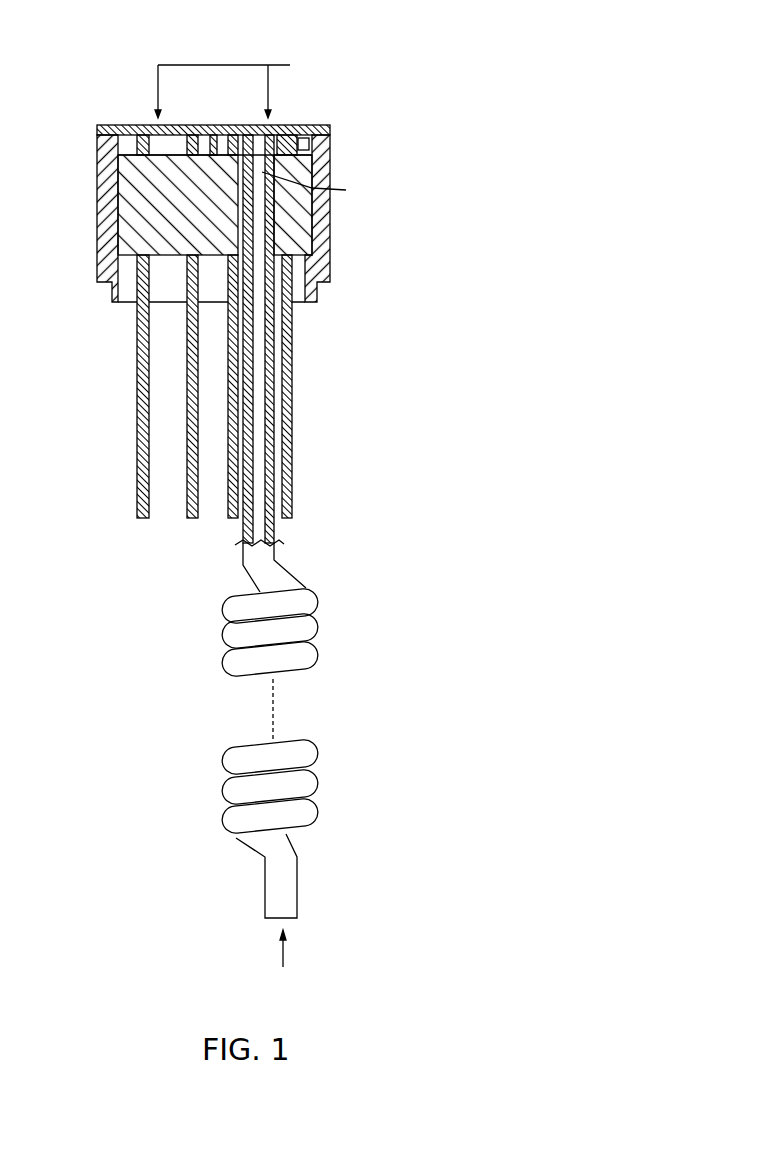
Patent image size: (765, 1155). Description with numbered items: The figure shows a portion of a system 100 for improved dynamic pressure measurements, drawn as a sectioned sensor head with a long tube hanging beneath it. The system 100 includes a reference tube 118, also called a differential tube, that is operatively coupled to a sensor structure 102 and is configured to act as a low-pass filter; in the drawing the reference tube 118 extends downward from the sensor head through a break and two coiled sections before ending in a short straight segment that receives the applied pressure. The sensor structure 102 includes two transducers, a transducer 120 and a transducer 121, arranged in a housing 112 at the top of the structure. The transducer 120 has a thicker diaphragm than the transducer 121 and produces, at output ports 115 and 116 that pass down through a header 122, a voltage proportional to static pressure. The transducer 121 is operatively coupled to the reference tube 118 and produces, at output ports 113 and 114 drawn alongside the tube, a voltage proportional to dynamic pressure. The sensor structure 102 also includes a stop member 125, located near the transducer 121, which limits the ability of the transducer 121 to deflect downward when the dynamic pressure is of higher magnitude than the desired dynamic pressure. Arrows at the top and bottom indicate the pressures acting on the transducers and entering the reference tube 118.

The system 100 is at (301, 22).
The sensor structure 102 is at (366, 316).
The housing 112 is at (327, 217).
The output port 113 is at (292, 447).
The output port 114 is at (236, 522).
The output port 115 is at (190, 522).
The output port 116 is at (142, 522).
The reference tube 118 is at (258, 564).
The transducer 120 is at (193, 127).
The transducer 121 is at (284, 126).
The header 122 is at (118, 213).
The stop member 125 is at (317, 137).